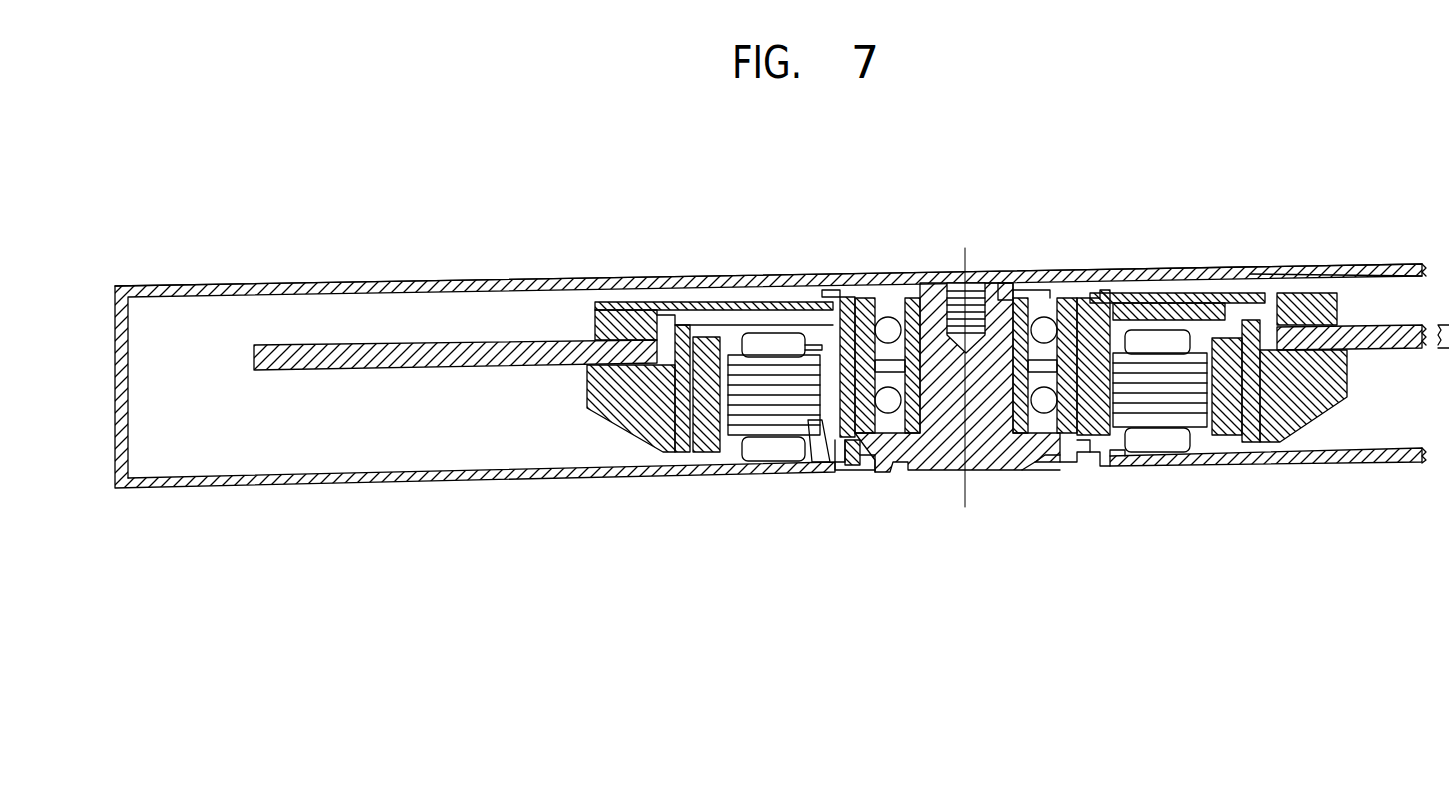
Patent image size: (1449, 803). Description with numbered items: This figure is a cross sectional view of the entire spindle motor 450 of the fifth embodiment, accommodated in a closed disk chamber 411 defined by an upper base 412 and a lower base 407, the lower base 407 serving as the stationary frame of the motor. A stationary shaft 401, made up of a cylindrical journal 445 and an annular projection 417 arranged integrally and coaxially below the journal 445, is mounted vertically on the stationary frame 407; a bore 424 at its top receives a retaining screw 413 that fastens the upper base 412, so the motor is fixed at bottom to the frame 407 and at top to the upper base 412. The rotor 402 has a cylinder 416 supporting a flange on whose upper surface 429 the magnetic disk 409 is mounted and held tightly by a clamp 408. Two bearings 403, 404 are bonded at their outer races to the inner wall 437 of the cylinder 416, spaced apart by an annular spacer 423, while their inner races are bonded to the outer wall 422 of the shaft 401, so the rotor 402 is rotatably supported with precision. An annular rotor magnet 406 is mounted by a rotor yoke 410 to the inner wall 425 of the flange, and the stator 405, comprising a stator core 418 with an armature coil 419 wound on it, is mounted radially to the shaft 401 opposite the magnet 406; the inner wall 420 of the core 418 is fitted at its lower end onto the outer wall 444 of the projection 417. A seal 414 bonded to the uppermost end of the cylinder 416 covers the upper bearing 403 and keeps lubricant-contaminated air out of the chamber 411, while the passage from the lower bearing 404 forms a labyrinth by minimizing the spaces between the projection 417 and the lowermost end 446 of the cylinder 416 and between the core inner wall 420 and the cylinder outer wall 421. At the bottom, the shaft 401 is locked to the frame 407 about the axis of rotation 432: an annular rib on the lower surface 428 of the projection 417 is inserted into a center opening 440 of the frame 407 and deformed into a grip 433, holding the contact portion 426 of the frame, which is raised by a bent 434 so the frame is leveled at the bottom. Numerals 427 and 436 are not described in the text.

The stationary shaft 401 is at (1029, 488).
The rotor 402 is at (597, 445).
The upper bearing 403 is at (836, 295).
The lower bearing 404 is at (936, 424).
The stator 405 is at (720, 452).
The rotor magnet 406 is at (1240, 470).
The lower base 407 is at (364, 507).
The clamp 408 is at (1370, 299).
The magnetic disk 409 is at (460, 331).
The rotor yoke 410 is at (677, 455).
The disk chamber 411 is at (272, 443).
The upper base 412 is at (342, 274).
The retaining screw 413 is at (948, 261).
The seal 414 is at (1110, 298).
The cylinder 416 is at (1082, 470).
The annular projection 417 is at (842, 462).
The stator core 418 is at (768, 350).
The armature coil 419 is at (740, 305).
The inner wall of stator core 420 is at (803, 330).
The outer wall of cylinder 421 is at (1100, 330).
The outer wall of stationary shaft 422 is at (903, 298).
The annular spacer 423 is at (1135, 298).
The bore 424 is at (996, 283).
The inner wall of flange 425 is at (1235, 293).
The contact portion 426 is at (866, 470).
The bracket 427 is at (1125, 468).
The lower surface of projection 428 is at (1098, 470).
The upper surface of flange 429 is at (1333, 293).
The axis of rotation 432 is at (975, 500).
The grip 433 is at (880, 472).
The bent 434 is at (824, 490).
The support block 436 is at (1298, 293).
The inner wall of cylinder 437 is at (870, 298).
The center opening 440 is at (1048, 468).
The outer wall of projection 444 is at (750, 457).
The cylindrical journal 445 is at (1057, 298).
The lowermost end of cylinder 446 is at (856, 468).
The spindle motor 450 is at (628, 300).